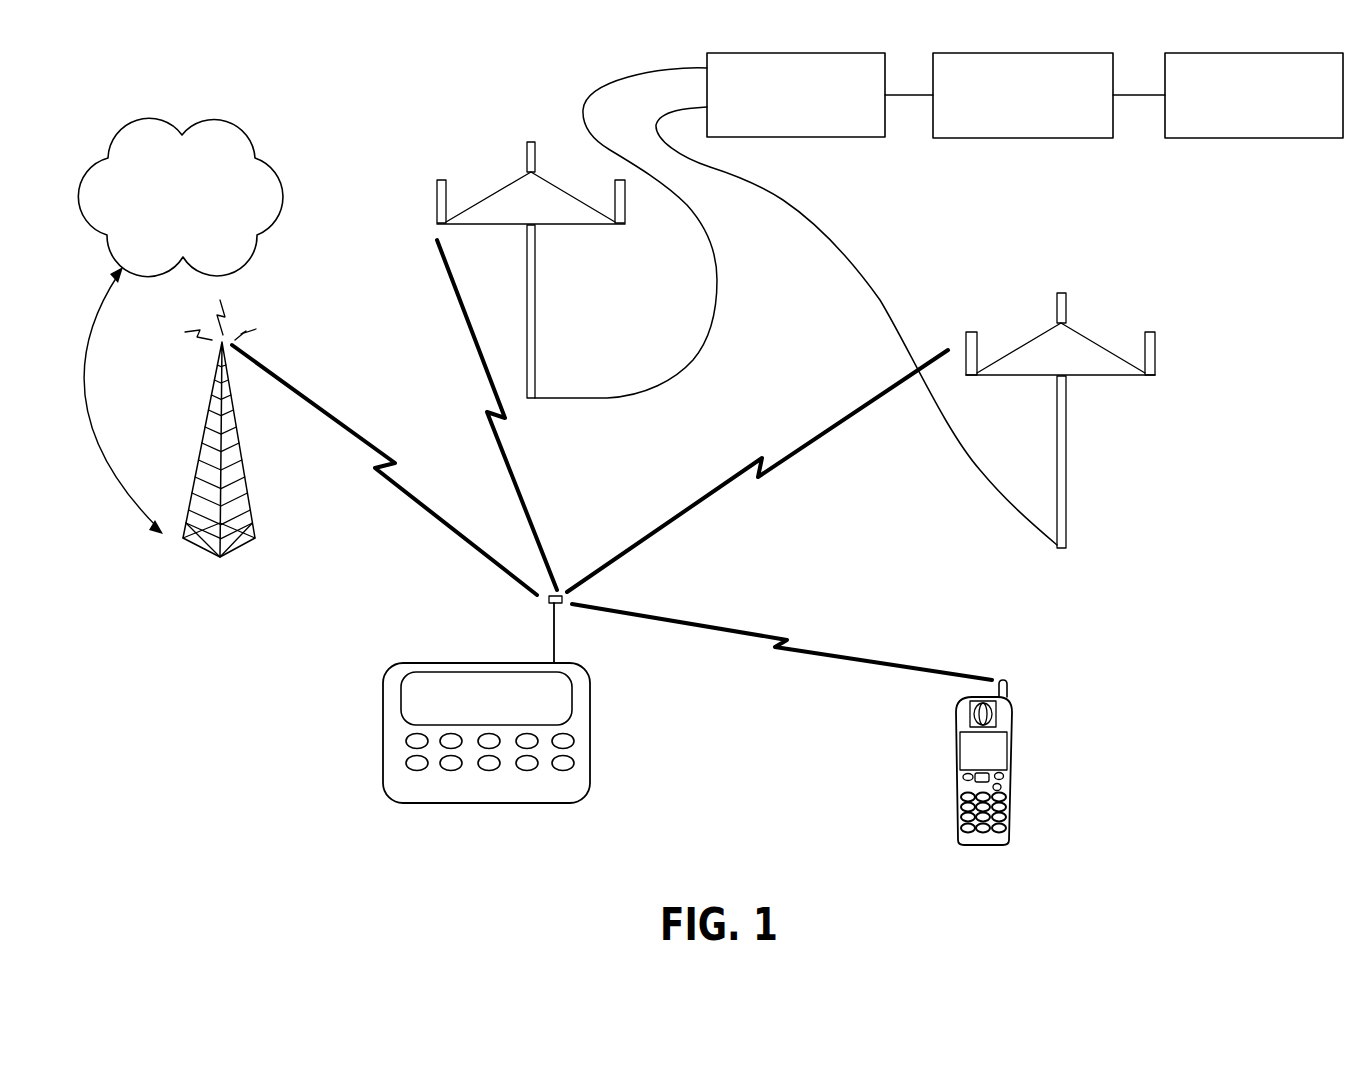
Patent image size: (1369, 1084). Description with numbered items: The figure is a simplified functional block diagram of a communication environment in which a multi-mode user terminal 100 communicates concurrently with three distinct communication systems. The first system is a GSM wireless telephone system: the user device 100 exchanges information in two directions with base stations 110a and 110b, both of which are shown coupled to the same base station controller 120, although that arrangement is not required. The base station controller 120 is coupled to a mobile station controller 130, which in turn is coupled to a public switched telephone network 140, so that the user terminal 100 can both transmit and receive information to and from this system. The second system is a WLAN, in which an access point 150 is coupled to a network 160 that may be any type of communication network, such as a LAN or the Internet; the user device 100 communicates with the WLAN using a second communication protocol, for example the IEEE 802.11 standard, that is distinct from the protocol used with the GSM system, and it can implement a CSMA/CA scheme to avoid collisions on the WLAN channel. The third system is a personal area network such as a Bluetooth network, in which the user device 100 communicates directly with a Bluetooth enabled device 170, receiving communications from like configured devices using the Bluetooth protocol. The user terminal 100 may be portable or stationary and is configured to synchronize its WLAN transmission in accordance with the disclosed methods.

The user terminal 100 is at (378, 785).
The base station 110a is at (582, 310).
The base station 110b is at (1085, 520).
The base station controller 120 is at (817, 146).
The mobile station controller 130 is at (1046, 146).
The public switched telephone network (PSTN) 140 is at (1270, 146).
The access point 150 is at (213, 570).
The network 160 is at (93, 146).
The Bluetooth enabled device 170 is at (995, 848).